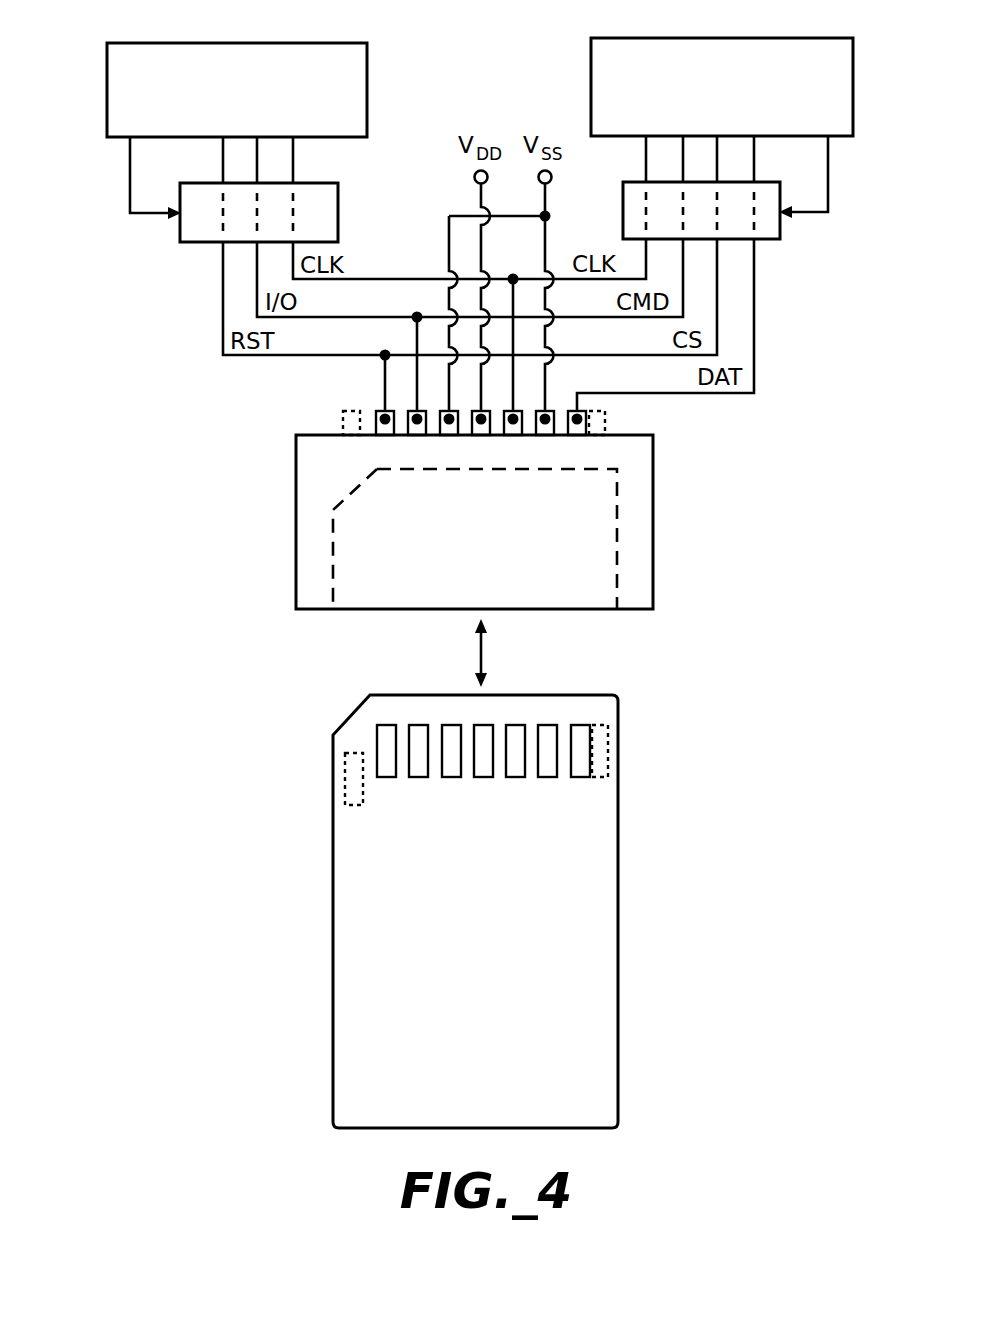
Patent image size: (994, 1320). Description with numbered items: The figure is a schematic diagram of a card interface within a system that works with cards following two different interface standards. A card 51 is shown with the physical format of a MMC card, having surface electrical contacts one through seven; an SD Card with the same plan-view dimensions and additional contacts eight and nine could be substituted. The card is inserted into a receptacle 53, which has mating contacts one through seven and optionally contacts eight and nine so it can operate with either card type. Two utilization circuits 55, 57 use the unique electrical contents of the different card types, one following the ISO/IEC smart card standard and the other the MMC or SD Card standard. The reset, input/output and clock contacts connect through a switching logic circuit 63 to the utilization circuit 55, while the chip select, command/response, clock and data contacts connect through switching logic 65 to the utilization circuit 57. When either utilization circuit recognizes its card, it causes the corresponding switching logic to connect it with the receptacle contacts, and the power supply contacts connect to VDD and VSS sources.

The card 51 is at (634, 860).
The receptacle 53 is at (670, 498).
The utilization circuit 55 is at (107, 107).
The utilization circuit 57 is at (853, 95).
The switching logic circuit 63 is at (180, 231).
The switching logic 65 is at (780, 227).